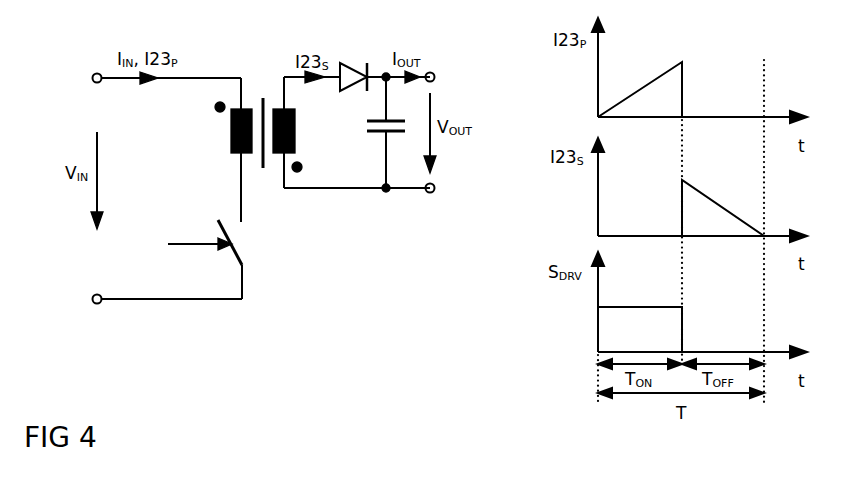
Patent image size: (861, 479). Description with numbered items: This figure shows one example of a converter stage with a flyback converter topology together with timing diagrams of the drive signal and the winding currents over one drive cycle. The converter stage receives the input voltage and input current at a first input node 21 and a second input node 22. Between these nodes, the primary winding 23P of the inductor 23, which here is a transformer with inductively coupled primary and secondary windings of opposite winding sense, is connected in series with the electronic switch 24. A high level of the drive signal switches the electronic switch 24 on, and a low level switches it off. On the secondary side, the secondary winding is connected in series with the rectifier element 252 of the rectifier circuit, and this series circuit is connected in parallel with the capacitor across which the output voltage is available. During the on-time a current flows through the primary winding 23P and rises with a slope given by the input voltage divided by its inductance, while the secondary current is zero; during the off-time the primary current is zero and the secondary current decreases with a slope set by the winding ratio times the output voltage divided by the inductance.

The first input node 21 is at (93, 74).
The second input node 22 is at (93, 303).
The inductor 23 is at (237, 100).
The primary winding 23P is at (231, 135).
The electronic switch 24 is at (258, 250).
The rectifier element 252 is at (350, 70).